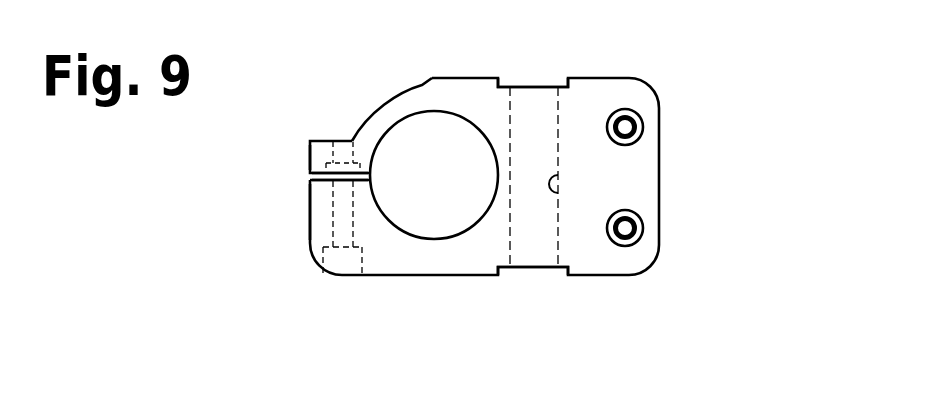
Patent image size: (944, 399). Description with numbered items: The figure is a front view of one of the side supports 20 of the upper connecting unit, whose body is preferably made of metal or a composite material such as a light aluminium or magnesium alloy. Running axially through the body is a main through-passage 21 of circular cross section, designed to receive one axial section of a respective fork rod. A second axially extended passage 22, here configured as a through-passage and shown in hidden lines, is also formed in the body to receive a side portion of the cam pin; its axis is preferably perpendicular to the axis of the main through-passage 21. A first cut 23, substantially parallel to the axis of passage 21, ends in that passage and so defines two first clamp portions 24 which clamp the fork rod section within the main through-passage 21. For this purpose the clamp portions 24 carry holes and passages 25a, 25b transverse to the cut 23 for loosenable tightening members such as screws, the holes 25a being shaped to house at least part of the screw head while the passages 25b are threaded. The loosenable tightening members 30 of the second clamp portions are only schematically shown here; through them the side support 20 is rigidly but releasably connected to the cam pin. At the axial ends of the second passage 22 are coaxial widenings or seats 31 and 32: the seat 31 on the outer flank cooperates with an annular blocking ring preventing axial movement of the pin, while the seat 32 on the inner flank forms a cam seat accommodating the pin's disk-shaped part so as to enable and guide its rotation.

The side support 20 is at (664, 70).
The main through-passage 21 is at (437, 112).
The second axially extended passage 22 is at (558, 193).
The first cut 23 is at (310, 177).
The first clamp portions 24 is at (320, 162).
The holes 25a is at (340, 262).
The passages 25b is at (343, 145).
The tightening members 30 is at (643, 127).
The seat 31 is at (545, 275).
The seat 32 is at (545, 82).